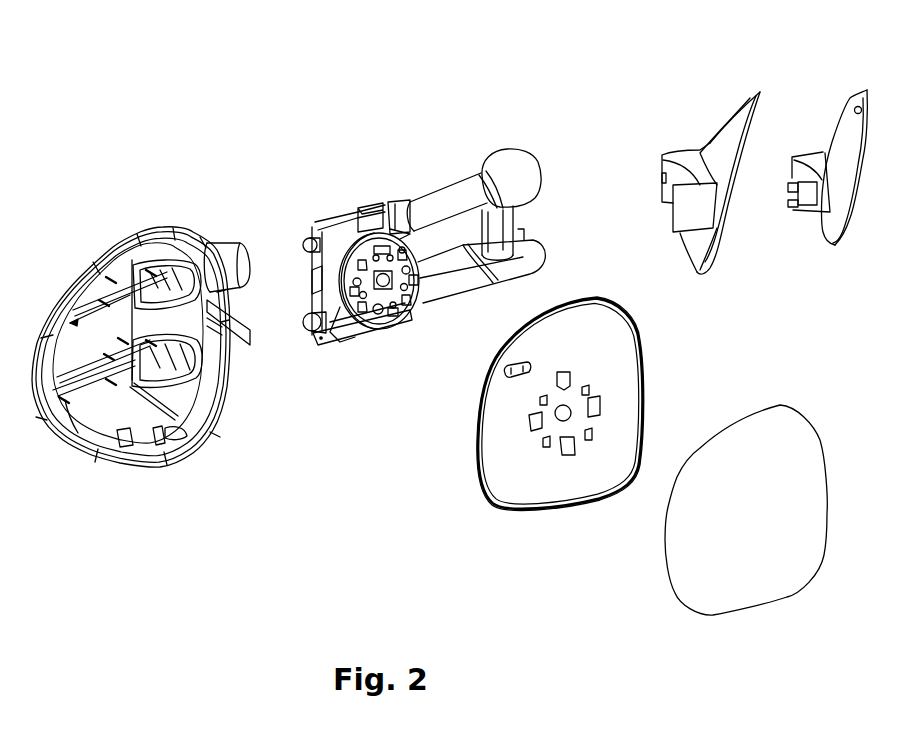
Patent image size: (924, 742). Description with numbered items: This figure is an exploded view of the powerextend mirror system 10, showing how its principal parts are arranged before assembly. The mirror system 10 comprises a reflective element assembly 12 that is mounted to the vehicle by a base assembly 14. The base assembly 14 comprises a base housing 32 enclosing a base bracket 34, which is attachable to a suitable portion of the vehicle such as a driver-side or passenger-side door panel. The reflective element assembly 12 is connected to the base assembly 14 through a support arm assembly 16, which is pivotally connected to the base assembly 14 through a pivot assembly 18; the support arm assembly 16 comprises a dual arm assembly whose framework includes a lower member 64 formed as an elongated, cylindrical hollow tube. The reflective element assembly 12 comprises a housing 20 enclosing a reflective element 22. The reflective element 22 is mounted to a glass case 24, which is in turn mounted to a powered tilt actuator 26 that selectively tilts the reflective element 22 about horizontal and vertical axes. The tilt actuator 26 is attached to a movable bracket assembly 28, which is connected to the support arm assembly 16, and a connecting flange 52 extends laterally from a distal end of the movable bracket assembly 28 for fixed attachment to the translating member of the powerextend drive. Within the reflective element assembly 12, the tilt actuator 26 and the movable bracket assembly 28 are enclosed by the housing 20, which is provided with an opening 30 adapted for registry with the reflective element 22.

The mirror system 10 is at (273, 91).
The reflective element assembly 12 is at (183, 219).
The base assembly 14 is at (803, 98).
The support arm assembly 16 is at (516, 138).
The pivot assembly 18 is at (528, 230).
The housing 20 is at (118, 240).
The reflective element 22 is at (680, 577).
The glass case 24 is at (502, 480).
The powered tilt actuator 26 is at (373, 318).
The movable bracket assembly 28 is at (371, 203).
The opening 30 is at (172, 433).
The base housing 32 is at (722, 130).
The base bracket 34 is at (850, 123).
The connecting flange 52 is at (312, 257).
The lower member 64 is at (313, 333).